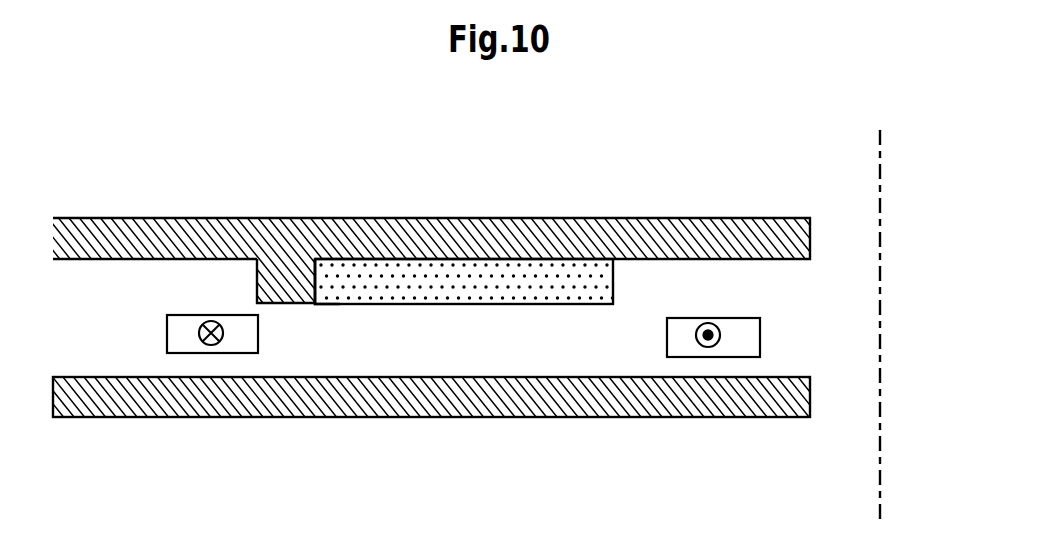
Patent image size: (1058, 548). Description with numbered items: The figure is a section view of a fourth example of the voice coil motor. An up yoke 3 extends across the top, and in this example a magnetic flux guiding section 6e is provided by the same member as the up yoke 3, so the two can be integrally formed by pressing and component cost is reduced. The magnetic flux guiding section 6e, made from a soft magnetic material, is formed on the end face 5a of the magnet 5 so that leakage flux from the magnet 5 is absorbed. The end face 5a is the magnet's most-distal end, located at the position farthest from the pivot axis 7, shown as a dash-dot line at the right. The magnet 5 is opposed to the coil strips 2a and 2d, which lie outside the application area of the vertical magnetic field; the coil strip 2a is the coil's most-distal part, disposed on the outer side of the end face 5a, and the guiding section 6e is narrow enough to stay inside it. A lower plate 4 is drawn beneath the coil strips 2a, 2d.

The up yoke 3 is at (140, 217).
The magnetic flux guiding section 6e is at (283, 273).
The end face of the magnet 5a is at (327, 277).
The magnet 5 is at (473, 280).
The lower plate 4 is at (145, 403).
The coil strip 2a is at (178, 330).
The coil strip 2d is at (745, 338).
The pivot axis 7 is at (878, 208).